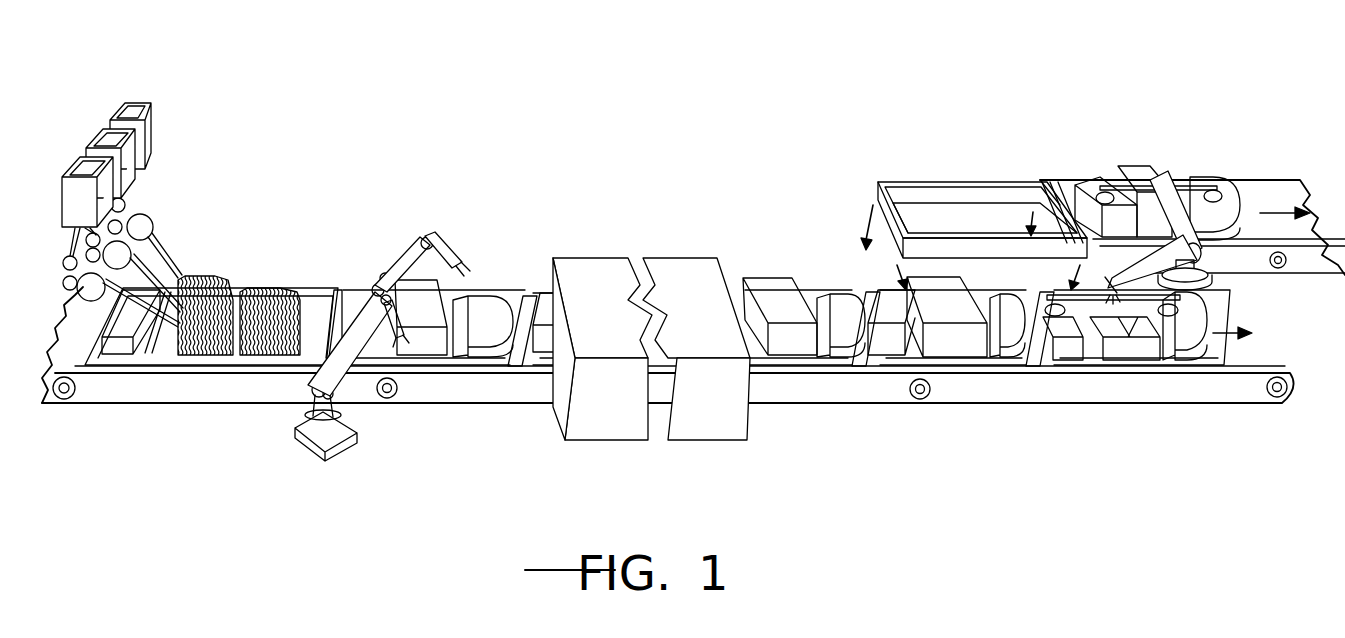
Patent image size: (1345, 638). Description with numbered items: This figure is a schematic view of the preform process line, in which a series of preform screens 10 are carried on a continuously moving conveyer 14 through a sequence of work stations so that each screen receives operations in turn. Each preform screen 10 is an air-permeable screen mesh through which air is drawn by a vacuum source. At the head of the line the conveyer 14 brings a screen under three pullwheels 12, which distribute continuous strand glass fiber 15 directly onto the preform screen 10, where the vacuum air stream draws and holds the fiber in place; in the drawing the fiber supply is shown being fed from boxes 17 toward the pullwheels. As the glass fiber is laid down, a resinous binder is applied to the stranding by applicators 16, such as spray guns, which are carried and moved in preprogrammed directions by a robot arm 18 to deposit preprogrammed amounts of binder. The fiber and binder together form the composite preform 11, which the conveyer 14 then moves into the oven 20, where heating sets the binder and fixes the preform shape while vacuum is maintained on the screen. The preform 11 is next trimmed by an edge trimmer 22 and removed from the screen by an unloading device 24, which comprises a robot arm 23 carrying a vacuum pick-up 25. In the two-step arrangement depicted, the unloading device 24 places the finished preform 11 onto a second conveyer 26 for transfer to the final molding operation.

The preform screen 10 is at (127, 345).
The composite preform 11 is at (1092, 185).
The pullwheel 12 is at (141, 224).
The conveyer 14 is at (170, 376).
The continuous strand glass fiber 15 is at (167, 253).
The applicator 16 is at (460, 268).
The component boxes 17 is at (152, 127).
The robot arm 18 is at (397, 265).
The oven 20 is at (626, 404).
The edge trimmer 22 is at (930, 188).
The robot arm 23 is at (1215, 284).
The unloading device 24 is at (1182, 203).
The vacuum pick-up 25 is at (1138, 182).
The second conveyer 26 is at (1263, 196).